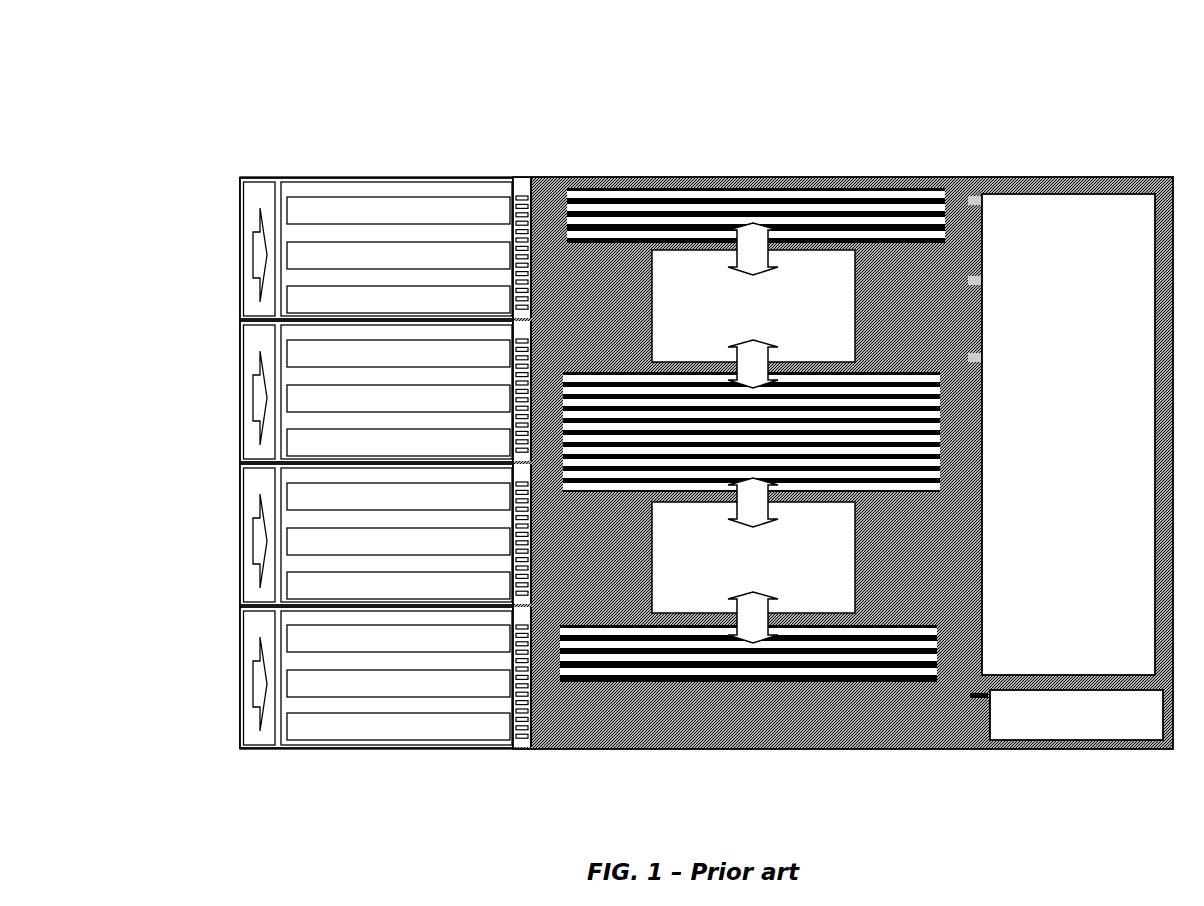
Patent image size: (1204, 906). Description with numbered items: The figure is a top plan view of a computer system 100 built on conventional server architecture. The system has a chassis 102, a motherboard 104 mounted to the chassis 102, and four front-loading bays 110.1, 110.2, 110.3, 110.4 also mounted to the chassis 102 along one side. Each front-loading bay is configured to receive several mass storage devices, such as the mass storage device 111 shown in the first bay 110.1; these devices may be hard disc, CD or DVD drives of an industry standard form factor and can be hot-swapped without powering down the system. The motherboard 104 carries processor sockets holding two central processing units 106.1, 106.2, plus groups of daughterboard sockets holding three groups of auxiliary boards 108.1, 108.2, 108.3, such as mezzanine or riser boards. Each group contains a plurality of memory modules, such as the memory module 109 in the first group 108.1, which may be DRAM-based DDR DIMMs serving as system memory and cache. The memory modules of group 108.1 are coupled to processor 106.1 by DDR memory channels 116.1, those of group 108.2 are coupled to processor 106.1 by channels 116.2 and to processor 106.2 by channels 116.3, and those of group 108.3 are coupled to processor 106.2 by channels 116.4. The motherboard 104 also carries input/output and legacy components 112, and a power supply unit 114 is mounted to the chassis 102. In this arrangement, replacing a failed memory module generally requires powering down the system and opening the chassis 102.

The computer system 100 is at (667, 418).
The chassis 102 is at (706, 491).
The motherboard 104 is at (899, 583).
The central processing unit 106.1 is at (779, 327).
The central processing unit 106.2 is at (779, 580).
The group of auxiliary boards 108.1 is at (724, 191).
The group of auxiliary boards 108.2 is at (636, 368).
The group of auxiliary boards 108.3 is at (633, 620).
The memory module 109 is at (822, 184).
The front-loading bay 110.1 is at (346, 229).
The front-loading bay 110.2 is at (222, 406).
The front-loading bay 110.3 is at (222, 548).
The front-loading bay 110.4 is at (222, 688).
The mass storage device 111 is at (375, 192).
The input/output and legacy components 112 is at (1053, 469).
The power supply unit 114 is at (1118, 726).
The DDR memory channels 116.1 is at (745, 260).
The DDR memory channels 116.2 is at (762, 352).
The DDR memory channels 116.3 is at (745, 509).
The DDR memory channels 116.4 is at (762, 604).